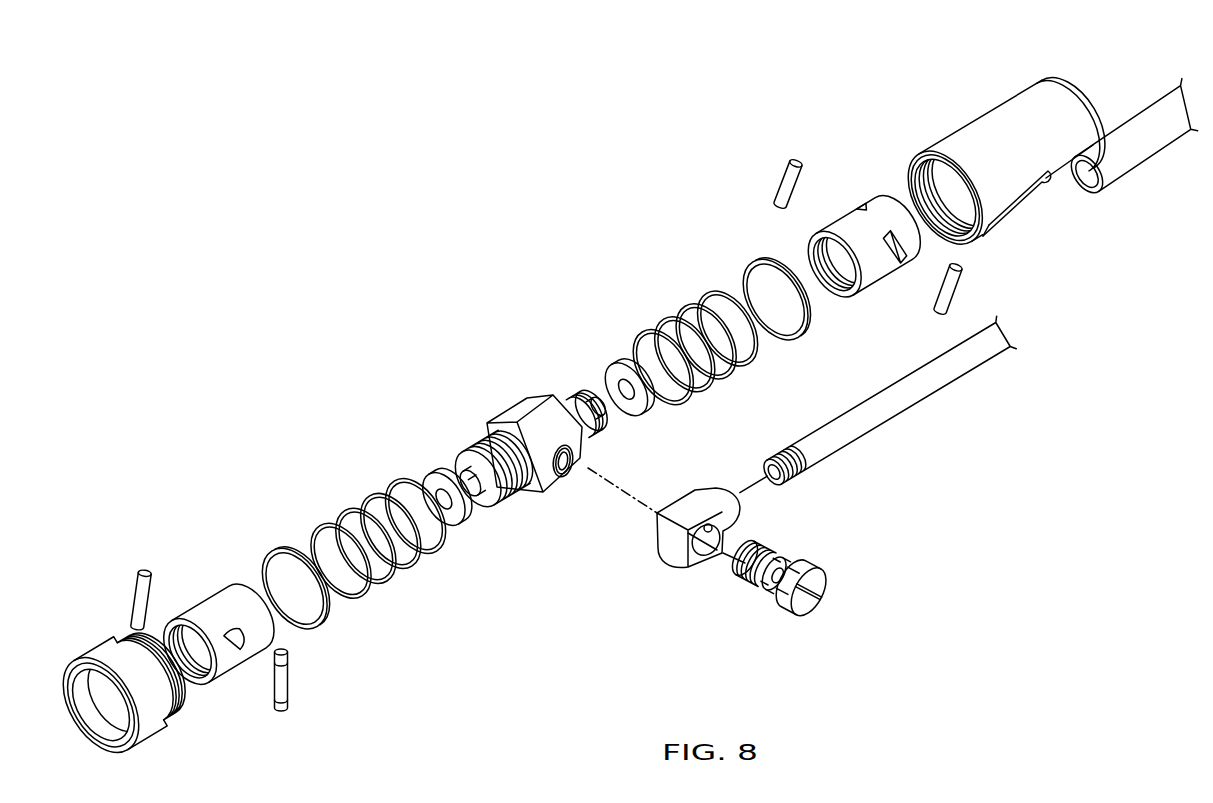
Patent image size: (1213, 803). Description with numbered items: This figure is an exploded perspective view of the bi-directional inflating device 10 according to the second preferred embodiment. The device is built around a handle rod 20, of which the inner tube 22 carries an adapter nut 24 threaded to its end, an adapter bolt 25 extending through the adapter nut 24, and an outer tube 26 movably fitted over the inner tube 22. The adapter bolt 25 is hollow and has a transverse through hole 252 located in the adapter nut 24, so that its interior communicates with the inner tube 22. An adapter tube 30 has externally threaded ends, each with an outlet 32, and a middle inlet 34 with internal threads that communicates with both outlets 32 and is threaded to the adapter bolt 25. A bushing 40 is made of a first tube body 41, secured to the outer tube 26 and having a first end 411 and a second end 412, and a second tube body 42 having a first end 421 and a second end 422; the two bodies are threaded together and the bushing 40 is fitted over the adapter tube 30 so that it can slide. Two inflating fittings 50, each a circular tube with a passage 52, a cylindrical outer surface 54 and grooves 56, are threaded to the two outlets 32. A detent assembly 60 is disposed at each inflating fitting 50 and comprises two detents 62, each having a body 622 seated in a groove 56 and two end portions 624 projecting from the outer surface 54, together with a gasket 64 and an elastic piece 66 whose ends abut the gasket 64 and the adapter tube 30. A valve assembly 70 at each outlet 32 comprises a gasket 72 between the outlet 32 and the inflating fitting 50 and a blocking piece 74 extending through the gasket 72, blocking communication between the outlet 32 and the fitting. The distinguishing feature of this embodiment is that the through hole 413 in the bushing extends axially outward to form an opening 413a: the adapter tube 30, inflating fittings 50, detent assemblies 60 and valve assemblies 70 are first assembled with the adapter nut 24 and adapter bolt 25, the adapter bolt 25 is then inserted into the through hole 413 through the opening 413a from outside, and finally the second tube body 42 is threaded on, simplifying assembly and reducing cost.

The bi-directional inflating device 10 is at (457, 183).
The handle rod 20 is at (817, 492).
The inner tube 22 is at (907, 413).
The adapter nut 24 is at (670, 563).
The adapter bolt 25 is at (803, 599).
The transverse through hole 252 is at (777, 593).
The outer tube 26 is at (1152, 150).
The adapter tube 30 is at (514, 440).
The outlet 32 is at (501, 497).
The inlet 34 is at (565, 478).
The bushing 40 is at (1005, 166).
The first tube body 41 is at (1005, 179).
The first end 411 is at (1094, 100).
The second end 412 is at (913, 160).
The through hole 413 is at (1051, 231).
The opening 413a is at (995, 232).
The second tube body 42 is at (139, 684).
The first end 421 is at (178, 710).
The second end 422 is at (75, 733).
The inflating fitting 50 is at (542, 439).
The passage 52 is at (195, 683).
The outer surface 54 is at (243, 600).
The groove 56 is at (227, 628).
The detent assembly 60 is at (533, 429).
The detent 62 is at (561, 420).
The body 622 is at (317, 686).
The end portion 624 is at (290, 661).
The gasket 64 is at (277, 550).
The elastic piece 66 is at (360, 508).
The valve assembly 70 is at (511, 439).
The gasket 72 is at (428, 487).
The blocking piece 74 is at (490, 478).